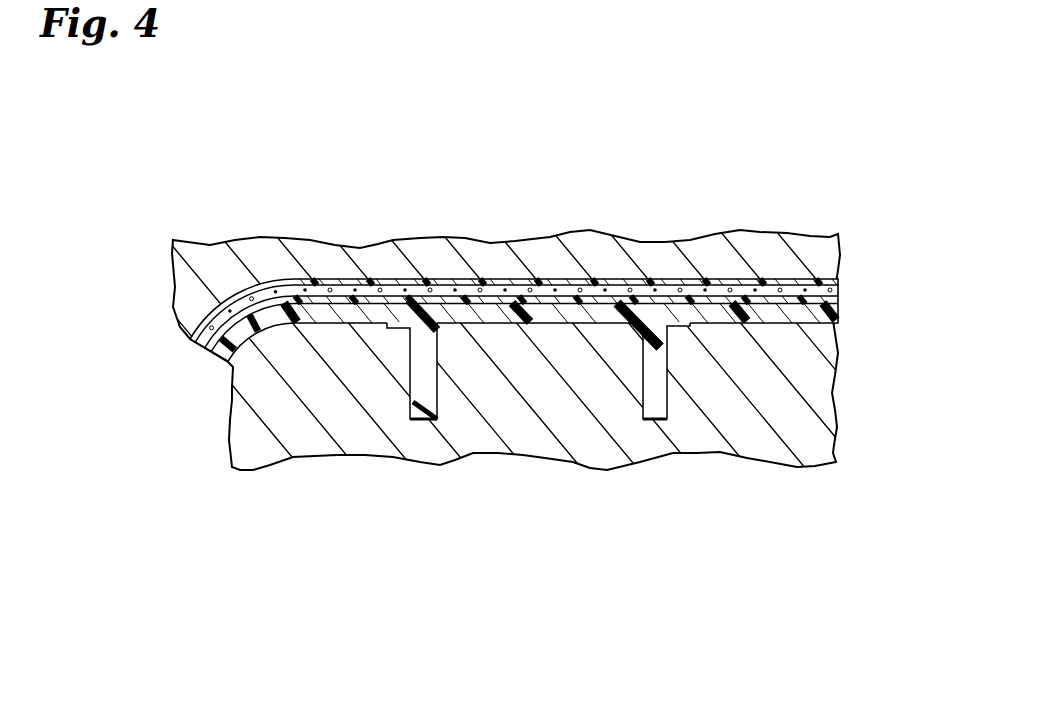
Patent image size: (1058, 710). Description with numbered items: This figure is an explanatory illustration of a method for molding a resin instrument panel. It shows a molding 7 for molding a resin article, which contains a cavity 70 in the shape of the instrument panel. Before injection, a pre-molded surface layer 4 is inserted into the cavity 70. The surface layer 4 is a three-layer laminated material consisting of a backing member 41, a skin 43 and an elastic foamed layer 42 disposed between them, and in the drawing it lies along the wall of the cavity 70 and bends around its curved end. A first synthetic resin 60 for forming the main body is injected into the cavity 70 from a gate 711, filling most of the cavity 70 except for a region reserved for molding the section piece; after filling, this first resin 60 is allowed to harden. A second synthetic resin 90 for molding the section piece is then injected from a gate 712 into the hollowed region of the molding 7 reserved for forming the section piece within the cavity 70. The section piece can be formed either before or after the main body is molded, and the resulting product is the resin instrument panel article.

The surface layer 4 is at (514, 229).
The backing member 41 is at (685, 147).
The elastic foamed layer 42 is at (608, 283).
The skin 43 is at (665, 278).
The molding 7 is at (537, 437).
The gate 711 is at (848, 306).
The gate 712 is at (658, 418).
The first synthetic resin 60 is at (273, 318).
The cavity 70 is at (418, 395).
The second synthetic resin 90 is at (654, 366).